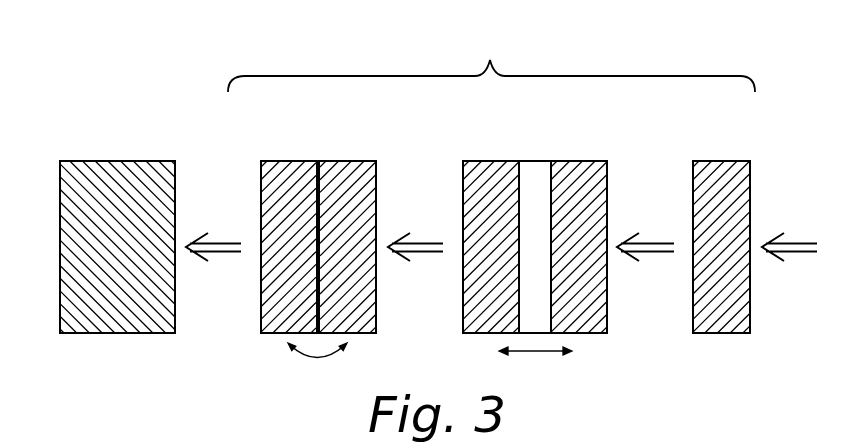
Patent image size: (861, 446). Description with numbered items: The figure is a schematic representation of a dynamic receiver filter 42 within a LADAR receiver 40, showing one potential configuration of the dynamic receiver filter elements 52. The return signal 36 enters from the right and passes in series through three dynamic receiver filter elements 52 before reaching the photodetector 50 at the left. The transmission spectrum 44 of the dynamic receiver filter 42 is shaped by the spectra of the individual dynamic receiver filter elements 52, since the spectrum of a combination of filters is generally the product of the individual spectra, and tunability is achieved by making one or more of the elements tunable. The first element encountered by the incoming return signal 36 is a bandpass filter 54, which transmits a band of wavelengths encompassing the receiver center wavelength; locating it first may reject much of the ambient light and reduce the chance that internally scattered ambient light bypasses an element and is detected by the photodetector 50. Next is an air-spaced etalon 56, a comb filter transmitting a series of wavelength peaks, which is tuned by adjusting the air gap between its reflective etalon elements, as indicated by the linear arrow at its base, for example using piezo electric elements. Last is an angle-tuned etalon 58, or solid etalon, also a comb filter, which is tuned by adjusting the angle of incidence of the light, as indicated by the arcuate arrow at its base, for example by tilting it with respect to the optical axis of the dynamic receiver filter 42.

The return signal 36 is at (795, 243).
The LADAR receiver 40 is at (118, 74).
The dynamic receiver filter 42 is at (490, 60).
The transmission spectrum 44 is at (229, 242).
The photodetector 50 is at (103, 161).
The dynamic receiver filter elements 52 is at (316, 158).
The bandpass filter 54 is at (728, 161).
The air-spaced etalon 56 is at (553, 161).
The angle-tuned etalon 58 is at (338, 161).